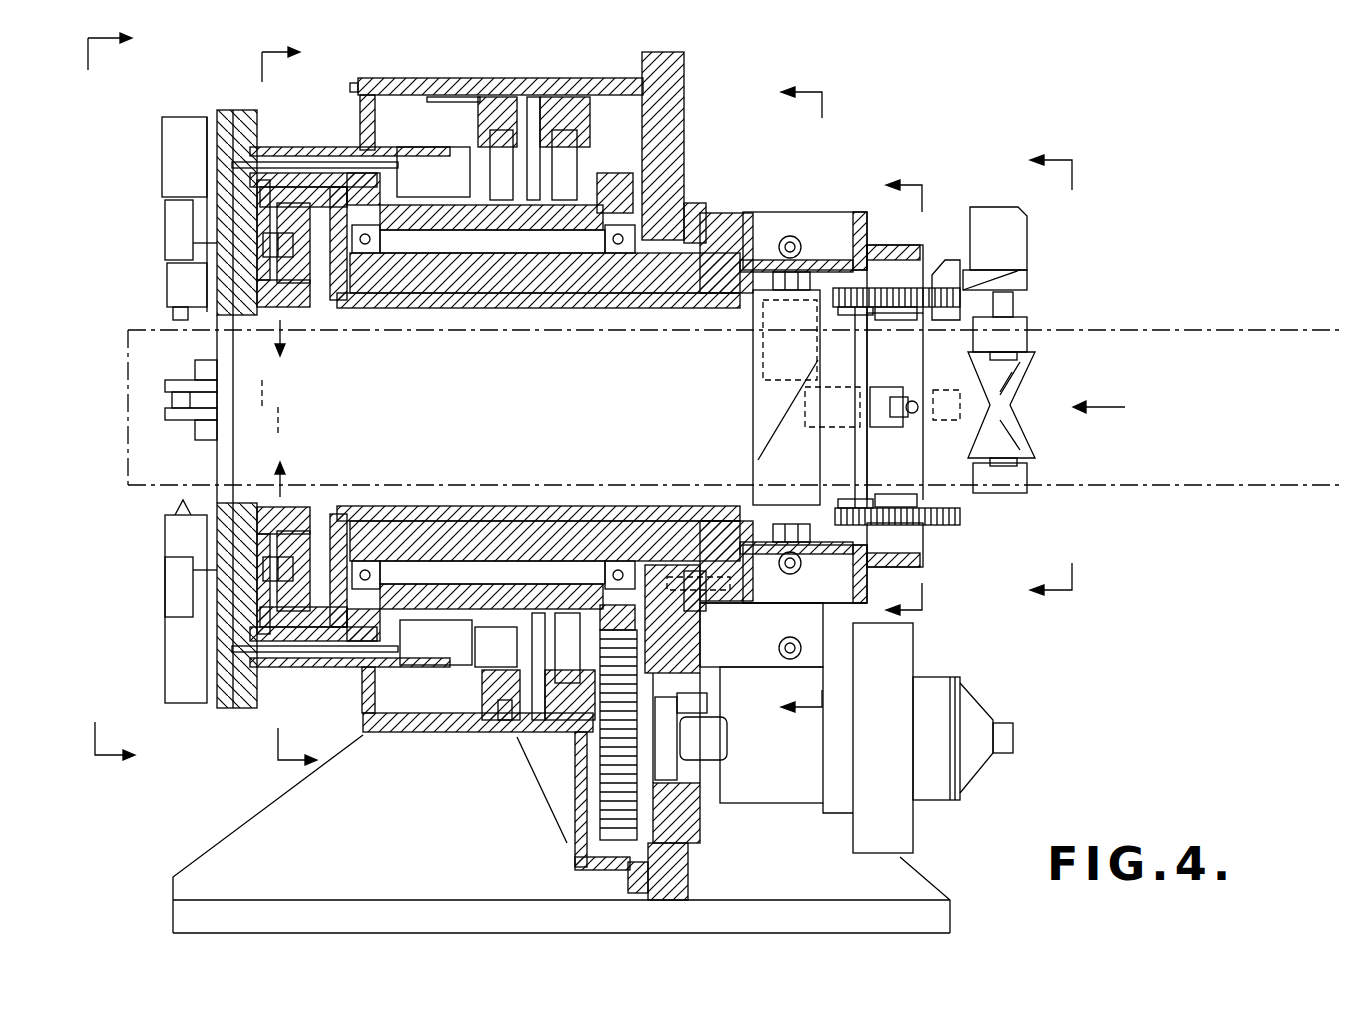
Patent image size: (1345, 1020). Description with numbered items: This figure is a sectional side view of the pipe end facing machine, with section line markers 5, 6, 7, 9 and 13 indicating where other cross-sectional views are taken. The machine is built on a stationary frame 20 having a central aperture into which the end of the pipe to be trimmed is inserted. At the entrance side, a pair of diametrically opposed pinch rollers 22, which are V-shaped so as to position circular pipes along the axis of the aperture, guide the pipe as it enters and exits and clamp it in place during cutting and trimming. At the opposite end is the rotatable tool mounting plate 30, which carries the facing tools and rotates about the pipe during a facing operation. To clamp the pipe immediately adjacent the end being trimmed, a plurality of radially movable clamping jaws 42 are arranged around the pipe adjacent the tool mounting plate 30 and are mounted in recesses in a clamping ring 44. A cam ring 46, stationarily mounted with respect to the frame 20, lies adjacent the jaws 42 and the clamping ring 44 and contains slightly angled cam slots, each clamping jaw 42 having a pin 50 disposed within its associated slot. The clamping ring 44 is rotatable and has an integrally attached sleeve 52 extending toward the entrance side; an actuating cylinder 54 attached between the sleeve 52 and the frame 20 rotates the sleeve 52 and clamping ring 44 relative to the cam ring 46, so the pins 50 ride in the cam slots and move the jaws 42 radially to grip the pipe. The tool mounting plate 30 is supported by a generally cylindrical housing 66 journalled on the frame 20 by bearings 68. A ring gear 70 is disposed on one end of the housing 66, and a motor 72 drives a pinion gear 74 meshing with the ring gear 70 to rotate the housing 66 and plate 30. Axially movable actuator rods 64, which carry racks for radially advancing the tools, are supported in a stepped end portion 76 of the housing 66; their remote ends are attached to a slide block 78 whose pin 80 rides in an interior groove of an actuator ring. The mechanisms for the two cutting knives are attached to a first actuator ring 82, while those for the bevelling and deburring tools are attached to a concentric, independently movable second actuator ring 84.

The tool mounting plate 30 is at (228, 110).
The stepped end portion 76 is at (302, 165).
The ring gear 70 is at (623, 173).
The bearings 68 is at (370, 252).
The cylindrical housing 66 is at (500, 215).
The stationary frame 20 is at (622, 525).
The sleeve 52 is at (532, 513).
The actuating cylinder 54 is at (757, 358).
The pinch rollers 22 is at (1030, 428).
The cam ring 46 is at (265, 517).
The clamping jaws 42 is at (296, 512).
The clamping ring 44 is at (337, 507).
The pin 50 is at (257, 580).
The actuator rod 64 is at (322, 652).
The slide block 78 is at (432, 660).
The pin 80 is at (500, 685).
The first actuator ring 82 is at (508, 712).
The second actuator ring 84 is at (548, 797).
The pinion gear 74 is at (572, 852).
The motor 72 is at (908, 688).
The section line 9 is at (125, 398).
The section line 6 is at (300, 400).
The section line 13 is at (783, 401).
The section line 7 is at (904, 397).
The section line 5 is at (1039, 376).